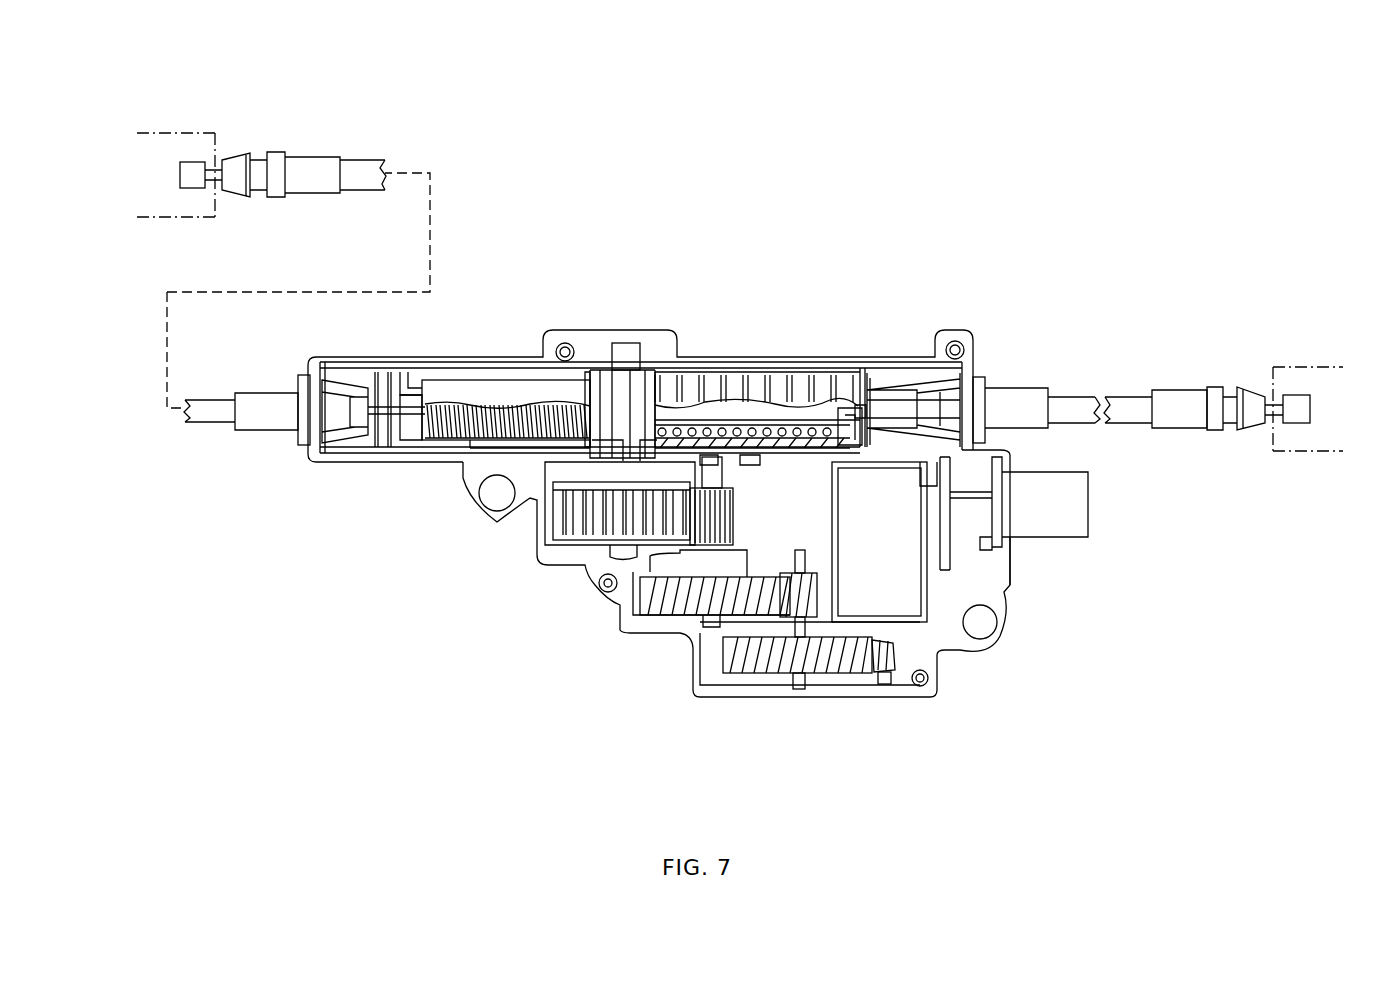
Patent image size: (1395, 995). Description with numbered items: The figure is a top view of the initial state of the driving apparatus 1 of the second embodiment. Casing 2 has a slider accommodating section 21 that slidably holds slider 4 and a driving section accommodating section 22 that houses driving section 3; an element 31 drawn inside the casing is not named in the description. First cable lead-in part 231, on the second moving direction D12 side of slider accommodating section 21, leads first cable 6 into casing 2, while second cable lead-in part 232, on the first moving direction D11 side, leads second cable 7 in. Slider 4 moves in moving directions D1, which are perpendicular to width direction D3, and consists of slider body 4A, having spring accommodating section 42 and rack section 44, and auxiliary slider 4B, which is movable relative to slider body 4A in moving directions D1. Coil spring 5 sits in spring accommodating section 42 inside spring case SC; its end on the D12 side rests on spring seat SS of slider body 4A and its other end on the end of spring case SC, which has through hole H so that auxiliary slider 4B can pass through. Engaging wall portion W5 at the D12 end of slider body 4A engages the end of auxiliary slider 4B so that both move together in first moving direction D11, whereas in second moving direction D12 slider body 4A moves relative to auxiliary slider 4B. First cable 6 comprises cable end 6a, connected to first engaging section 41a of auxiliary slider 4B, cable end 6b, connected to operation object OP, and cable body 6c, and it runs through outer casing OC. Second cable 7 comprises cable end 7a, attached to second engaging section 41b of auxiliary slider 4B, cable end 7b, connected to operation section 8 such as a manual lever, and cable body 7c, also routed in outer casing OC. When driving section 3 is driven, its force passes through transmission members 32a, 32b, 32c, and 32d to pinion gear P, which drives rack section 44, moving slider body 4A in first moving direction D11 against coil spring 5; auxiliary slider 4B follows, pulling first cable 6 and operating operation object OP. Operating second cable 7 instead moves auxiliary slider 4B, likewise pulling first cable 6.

The driving apparatus 1 is at (1160, 184).
The casing 2 is at (986, 334).
The driving section 3 is at (686, 620).
The slider 4 is at (943, 328).
The slider body 4A is at (872, 398).
The auxiliary slider 4B is at (884, 415).
The coil spring 5 is at (450, 437).
The first cable 6 is at (1270, 400).
The cable end 6a is at (797, 395).
The cable end 6b is at (1300, 417).
The cable body 6c is at (868, 376).
The second cable 7 is at (377, 443).
The cable end 7a is at (585, 380).
The cable end 7b is at (200, 175).
The cable body 7c is at (400, 408).
The operation section 8 is at (195, 132).
The slider accommodating section 21 is at (503, 372).
The driving section accommodating section 22 is at (668, 562).
The motor 31 is at (908, 556).
The transmission member 32a is at (896, 652).
The transmission member 32b is at (763, 674).
The transmission member 32c is at (665, 606).
The transmission member 32d is at (585, 522).
The first engaging section 41a is at (838, 410).
The second engaging section 41b is at (545, 405).
The spring accommodating section 42 is at (687, 434).
The rack section 44 is at (705, 378).
The first cable lead-in part 231 is at (986, 355).
The second cable lead-in part 232 is at (305, 457).
The pinion gear P is at (632, 380).
The through hole H is at (400, 425).
The spring case SC is at (485, 443).
The spring seat SS is at (820, 442).
The engaging wall portion W5 is at (858, 408).
The outer casing OC is at (212, 415).
The operation object OP is at (1287, 452).
The moving directions D1 is at (757, 97).
The first moving direction D11 is at (732, 188).
The second moving direction D12 is at (943, 188).
The width direction D3 is at (123, 372).